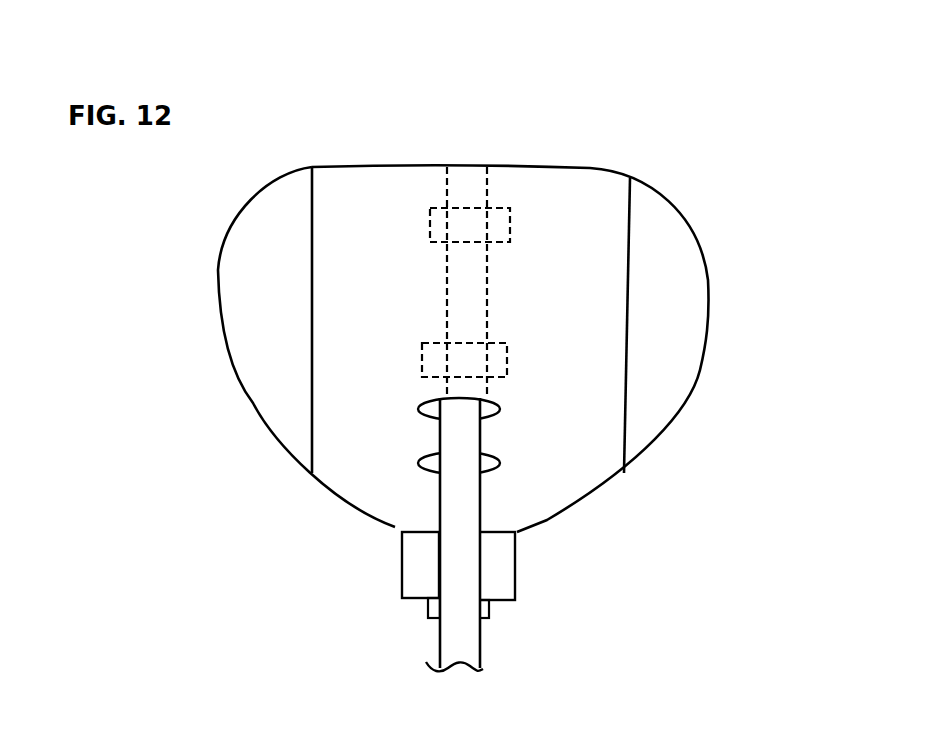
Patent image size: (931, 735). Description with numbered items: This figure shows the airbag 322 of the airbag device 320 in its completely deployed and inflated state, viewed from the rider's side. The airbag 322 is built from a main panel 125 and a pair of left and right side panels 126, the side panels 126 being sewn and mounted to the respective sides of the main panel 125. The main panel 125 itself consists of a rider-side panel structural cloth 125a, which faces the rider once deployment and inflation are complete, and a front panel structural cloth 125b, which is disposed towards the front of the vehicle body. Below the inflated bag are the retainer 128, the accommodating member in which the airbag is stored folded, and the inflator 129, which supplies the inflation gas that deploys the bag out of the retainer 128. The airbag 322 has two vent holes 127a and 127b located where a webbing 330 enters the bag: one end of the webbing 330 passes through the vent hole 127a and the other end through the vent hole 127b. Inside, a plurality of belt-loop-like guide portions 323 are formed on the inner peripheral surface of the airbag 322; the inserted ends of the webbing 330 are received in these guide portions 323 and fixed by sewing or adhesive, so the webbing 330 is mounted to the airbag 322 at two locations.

The airbag device 320 is at (441, 137).
The airbag 322 is at (704, 231).
The main panel 125 is at (648, 125).
The rider-side panel structural cloth 125a is at (577, 193).
The front panel structural cloth 125b is at (523, 193).
The side panels 126 is at (267, 412).
The guide portions 323 is at (430, 210).
The vent hole 127a is at (496, 408).
The vent hole 127b is at (498, 461).
The retainer 128 is at (523, 578).
The inflator 129 is at (488, 615).
The webbing 330 is at (472, 640).